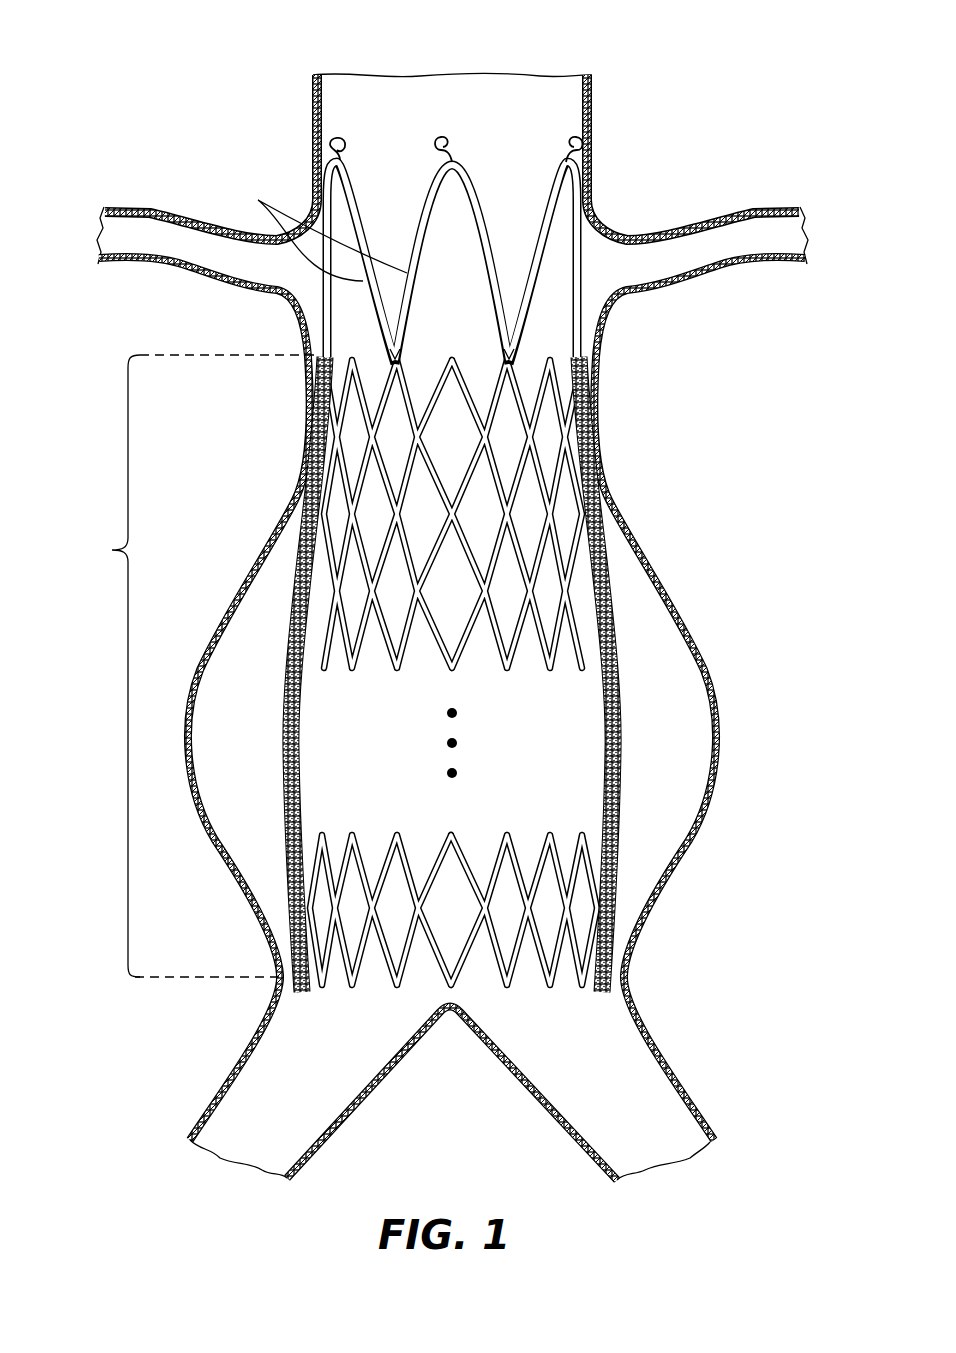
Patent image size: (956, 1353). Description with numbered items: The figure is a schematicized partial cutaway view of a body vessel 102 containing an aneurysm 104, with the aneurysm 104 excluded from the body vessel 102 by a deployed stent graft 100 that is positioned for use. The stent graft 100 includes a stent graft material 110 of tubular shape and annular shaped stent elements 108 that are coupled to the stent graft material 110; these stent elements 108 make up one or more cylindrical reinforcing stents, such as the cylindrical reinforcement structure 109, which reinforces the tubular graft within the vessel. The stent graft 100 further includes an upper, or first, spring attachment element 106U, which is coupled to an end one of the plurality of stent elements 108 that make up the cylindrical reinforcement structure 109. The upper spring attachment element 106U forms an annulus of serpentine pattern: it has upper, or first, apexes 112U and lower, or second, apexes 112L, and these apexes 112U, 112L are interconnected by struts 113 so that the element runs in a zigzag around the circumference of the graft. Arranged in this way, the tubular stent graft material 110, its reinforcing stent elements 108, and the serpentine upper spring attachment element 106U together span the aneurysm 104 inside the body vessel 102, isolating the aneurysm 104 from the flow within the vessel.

The stent graft 100 is at (452, 515).
The body vessel 102 is at (343, 87).
The aneurysm 104 is at (213, 642).
The upper spring attachment element 106U is at (432, 195).
The stent elements 108 is at (496, 442).
The cylindrical reinforcing stent 109 is at (194, 666).
The stent graft material 110 is at (280, 728).
The upper apexes 112U is at (350, 140).
The lower apexes 112L is at (397, 357).
The struts 113 is at (311, 233).